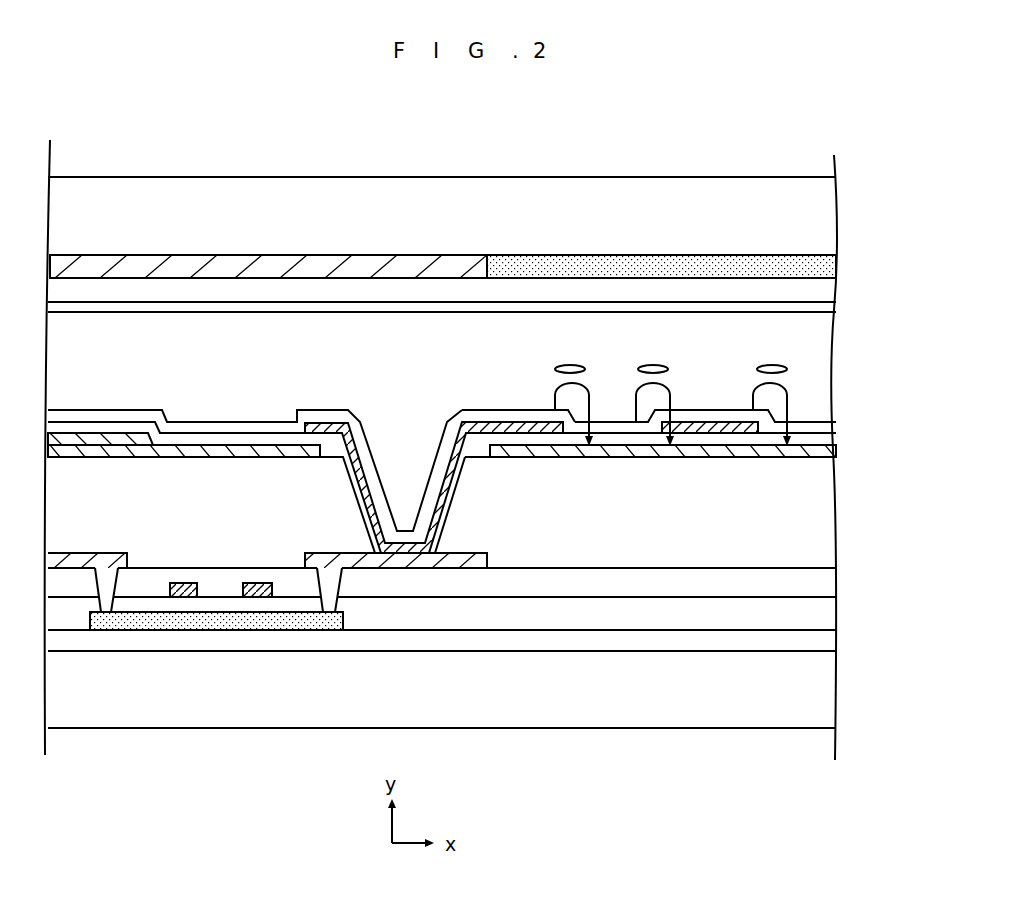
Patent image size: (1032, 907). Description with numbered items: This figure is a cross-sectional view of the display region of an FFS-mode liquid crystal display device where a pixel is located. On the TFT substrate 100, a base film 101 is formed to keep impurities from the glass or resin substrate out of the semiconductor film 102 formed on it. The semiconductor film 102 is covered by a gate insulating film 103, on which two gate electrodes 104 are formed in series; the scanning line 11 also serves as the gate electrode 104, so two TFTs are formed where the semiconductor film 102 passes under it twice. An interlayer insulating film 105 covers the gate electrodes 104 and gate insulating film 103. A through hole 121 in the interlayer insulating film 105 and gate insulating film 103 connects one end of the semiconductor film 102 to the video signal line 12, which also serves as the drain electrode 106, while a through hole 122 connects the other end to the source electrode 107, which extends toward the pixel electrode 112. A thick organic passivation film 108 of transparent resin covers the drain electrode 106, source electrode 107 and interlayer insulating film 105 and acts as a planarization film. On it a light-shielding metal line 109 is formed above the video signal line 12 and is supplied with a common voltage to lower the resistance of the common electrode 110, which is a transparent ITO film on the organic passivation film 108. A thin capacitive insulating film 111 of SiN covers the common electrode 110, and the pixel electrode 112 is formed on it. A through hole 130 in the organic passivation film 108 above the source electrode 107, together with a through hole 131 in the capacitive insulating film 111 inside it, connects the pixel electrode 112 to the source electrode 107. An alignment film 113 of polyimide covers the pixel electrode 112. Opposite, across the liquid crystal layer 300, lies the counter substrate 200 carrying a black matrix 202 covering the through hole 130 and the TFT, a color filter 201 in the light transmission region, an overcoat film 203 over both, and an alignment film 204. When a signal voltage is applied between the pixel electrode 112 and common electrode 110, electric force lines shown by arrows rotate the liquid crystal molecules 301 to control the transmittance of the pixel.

The TFT substrate 100 is at (820, 688).
The base film 101 is at (820, 638).
The semiconductor film 102 is at (298, 625).
The gate insulating film 103 is at (820, 610).
The gate electrode 104 is at (206, 681).
The scanning line 11 is at (262, 594).
The interlayer insulating film 105 is at (820, 578).
The drain electrode 106 is at (96, 538).
The video signal line 12 is at (82, 553).
The source electrode 107 is at (332, 553).
The organic passivation film 108 is at (820, 505).
The light-shielding metal line 109 is at (97, 458).
The common electrode 110 is at (611, 457).
The capacitive insulating film 111 is at (820, 437).
The pixel electrode 112 is at (706, 423).
The alignment film 113 is at (492, 410).
The through hole 121 is at (115, 588).
The through hole 122 is at (303, 588).
The through hole 130 is at (458, 497).
The through hole 131 is at (437, 531).
The counter substrate 200 is at (820, 215).
The color filter 201 is at (820, 263).
The black matrix 202 is at (343, 262).
The overcoat film 203 is at (820, 290).
The alignment film 204 is at (522, 306).
The liquid crystal layer 300 is at (820, 350).
The liquid crystal molecule 301 is at (768, 363).